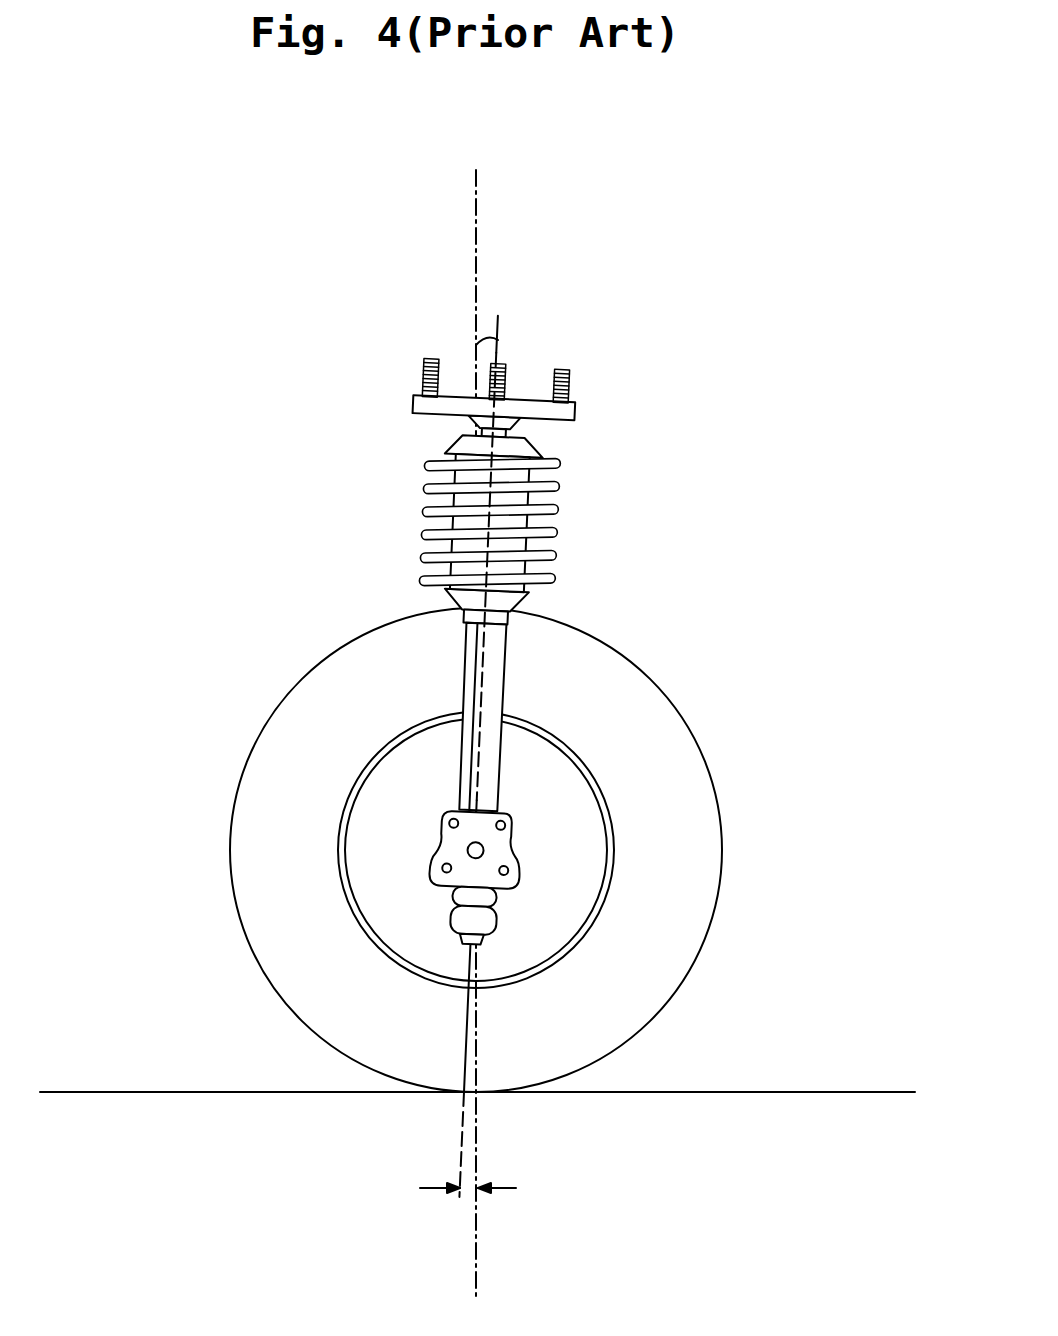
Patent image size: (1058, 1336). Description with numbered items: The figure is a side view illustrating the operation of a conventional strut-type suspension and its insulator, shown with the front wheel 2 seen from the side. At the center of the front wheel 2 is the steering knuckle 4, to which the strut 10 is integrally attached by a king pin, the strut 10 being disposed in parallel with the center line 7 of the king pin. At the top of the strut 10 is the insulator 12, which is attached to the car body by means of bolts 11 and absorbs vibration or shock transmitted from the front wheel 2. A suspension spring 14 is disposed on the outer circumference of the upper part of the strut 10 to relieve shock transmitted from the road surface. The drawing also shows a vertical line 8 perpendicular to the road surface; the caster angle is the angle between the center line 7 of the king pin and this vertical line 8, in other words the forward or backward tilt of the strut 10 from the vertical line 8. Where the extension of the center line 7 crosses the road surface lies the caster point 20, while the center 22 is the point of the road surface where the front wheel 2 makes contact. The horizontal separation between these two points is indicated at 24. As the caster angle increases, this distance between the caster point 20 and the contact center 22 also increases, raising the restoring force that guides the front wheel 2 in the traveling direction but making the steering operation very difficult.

The front wheel 2 is at (685, 809).
The steering knuckle 4 is at (500, 853).
The center line of the king pin 7 is at (500, 318).
The vertical line 8 is at (476, 207).
The strut 10 is at (495, 652).
The bolts 11 is at (568, 372).
The insulator 12 is at (563, 412).
The suspension spring 14 is at (555, 496).
The caster point 20 is at (462, 1094).
The center of the road surface where the front wheel contacts 22 is at (482, 1094).
The offset distance between axis and contact point 24 is at (468, 1210).